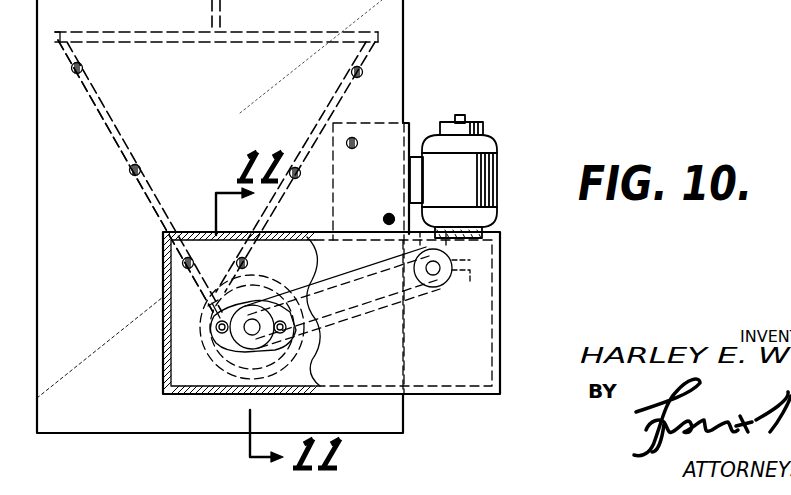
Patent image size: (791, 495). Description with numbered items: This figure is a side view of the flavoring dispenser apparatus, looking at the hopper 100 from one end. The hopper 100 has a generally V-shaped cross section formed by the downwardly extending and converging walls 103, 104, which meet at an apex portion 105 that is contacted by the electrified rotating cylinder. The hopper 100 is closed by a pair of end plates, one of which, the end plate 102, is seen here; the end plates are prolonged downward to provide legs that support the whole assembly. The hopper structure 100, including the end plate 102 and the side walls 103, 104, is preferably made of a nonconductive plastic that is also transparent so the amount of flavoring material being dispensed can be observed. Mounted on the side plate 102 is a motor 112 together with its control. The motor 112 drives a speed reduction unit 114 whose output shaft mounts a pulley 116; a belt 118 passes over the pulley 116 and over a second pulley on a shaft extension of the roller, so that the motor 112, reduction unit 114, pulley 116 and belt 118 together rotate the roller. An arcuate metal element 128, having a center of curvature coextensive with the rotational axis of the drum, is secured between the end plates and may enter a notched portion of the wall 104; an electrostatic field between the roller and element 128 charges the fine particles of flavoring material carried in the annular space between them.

The hopper 100 is at (104, 130).
The end plate 102 is at (397, 55).
The wall 103 is at (150, 202).
The wall 104 is at (343, 100).
The apex portion 105 is at (239, 341).
The motor 112 is at (497, 162).
The speed reduction unit 114 is at (470, 268).
The pulley 116 is at (442, 282).
The belt 118 is at (375, 310).
The arcuate metal element 128 is at (270, 275).